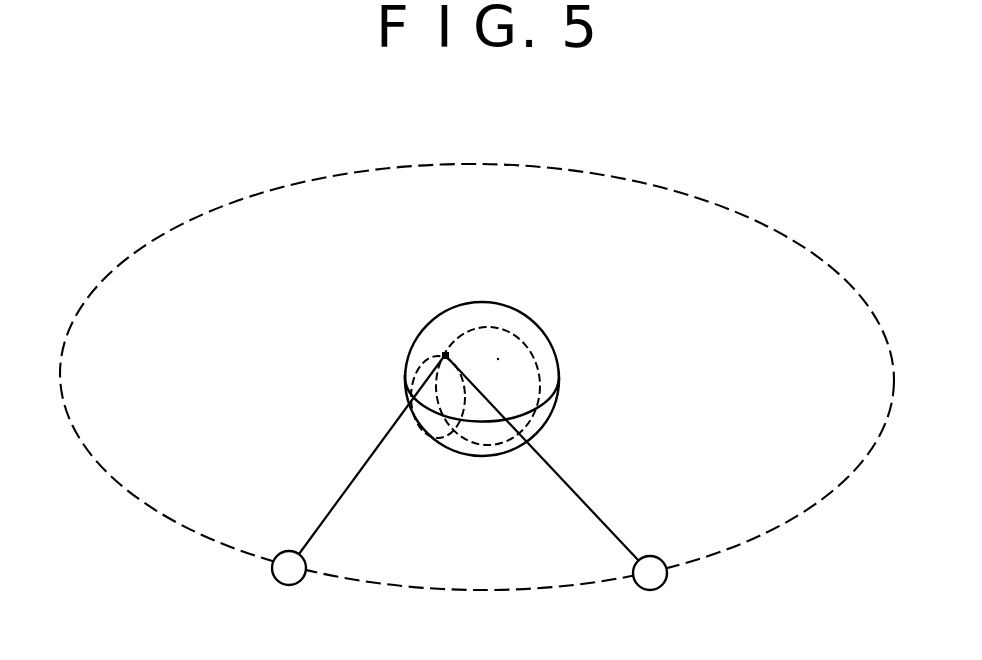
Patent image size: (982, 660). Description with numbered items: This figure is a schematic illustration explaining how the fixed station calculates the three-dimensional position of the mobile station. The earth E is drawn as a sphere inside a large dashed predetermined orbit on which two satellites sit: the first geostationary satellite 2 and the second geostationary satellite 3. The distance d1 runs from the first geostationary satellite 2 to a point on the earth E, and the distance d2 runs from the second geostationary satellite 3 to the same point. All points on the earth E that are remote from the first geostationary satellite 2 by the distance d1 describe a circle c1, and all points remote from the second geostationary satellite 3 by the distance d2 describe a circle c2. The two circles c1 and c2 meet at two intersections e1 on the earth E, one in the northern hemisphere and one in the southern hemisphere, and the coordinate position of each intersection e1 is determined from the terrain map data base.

The first geostationary satellite 2 is at (285, 586).
The second geostationary satellite 3 is at (661, 590).
The earth E is at (458, 303).
The intersection e1 is at (445, 355).
The circle c1 is at (412, 368).
The circle c2 is at (538, 352).
The distance d1 is at (344, 492).
The distance d2 is at (580, 493).